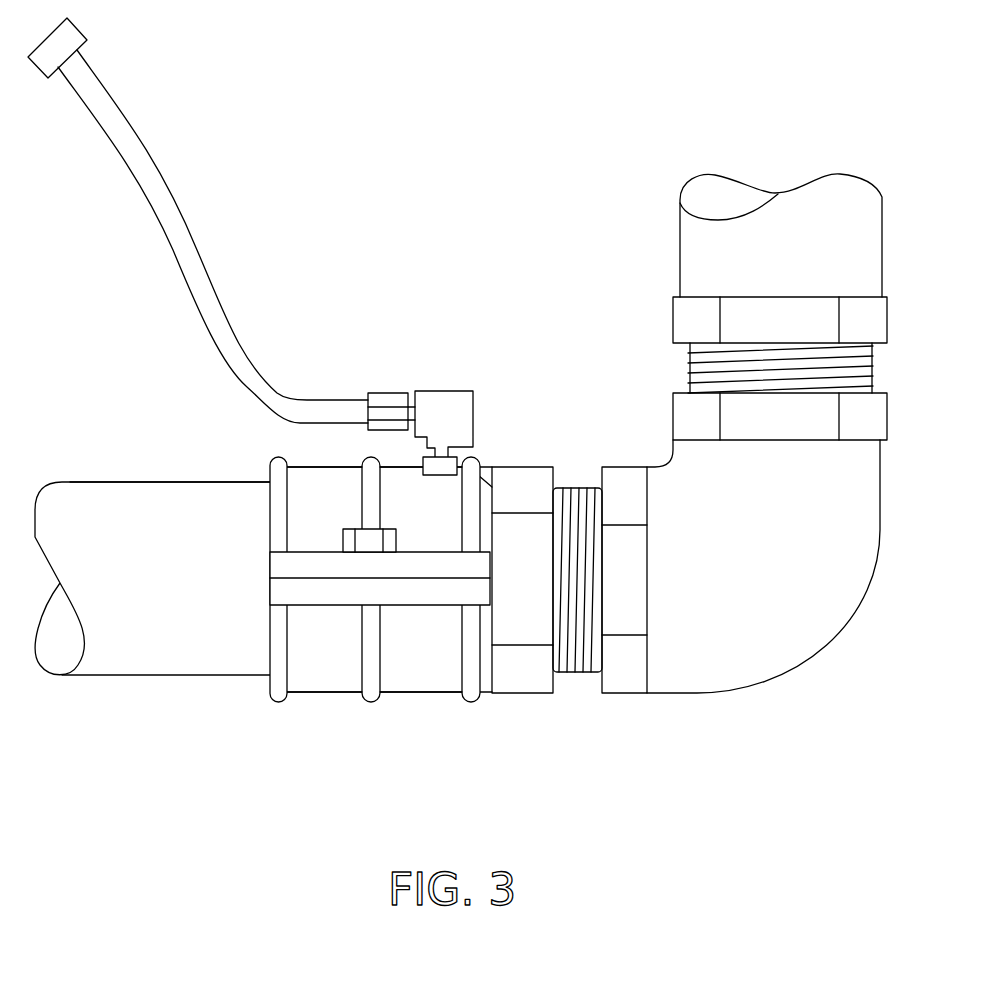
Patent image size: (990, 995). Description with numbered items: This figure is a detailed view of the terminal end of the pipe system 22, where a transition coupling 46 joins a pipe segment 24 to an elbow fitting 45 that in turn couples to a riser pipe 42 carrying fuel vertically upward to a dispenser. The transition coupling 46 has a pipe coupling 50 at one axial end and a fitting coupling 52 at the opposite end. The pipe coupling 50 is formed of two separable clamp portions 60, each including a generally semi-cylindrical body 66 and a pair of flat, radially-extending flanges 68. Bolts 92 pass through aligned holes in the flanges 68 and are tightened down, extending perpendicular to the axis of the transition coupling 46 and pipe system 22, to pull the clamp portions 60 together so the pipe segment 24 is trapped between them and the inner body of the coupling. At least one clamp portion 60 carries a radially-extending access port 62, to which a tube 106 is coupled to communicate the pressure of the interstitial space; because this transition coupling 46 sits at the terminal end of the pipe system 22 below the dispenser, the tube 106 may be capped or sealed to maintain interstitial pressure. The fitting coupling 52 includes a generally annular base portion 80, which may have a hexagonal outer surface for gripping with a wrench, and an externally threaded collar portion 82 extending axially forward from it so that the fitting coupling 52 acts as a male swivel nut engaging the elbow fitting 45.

The pipe system 22 is at (105, 675).
The pipe segment 24 is at (128, 494).
The riser pipe 42 is at (882, 237).
The elbow fitting 45 is at (826, 615).
The transition coupling 46 is at (291, 695).
The pipe coupling 50 is at (296, 432).
The fitting coupling 52 is at (491, 773).
The clamp portion 60 is at (322, 468).
The access port 62 is at (455, 463).
The semi-cylindrical body 66 is at (398, 470).
The flange 68 is at (275, 563).
The base portion 80 is at (540, 695).
The collar portion 82 is at (595, 640).
The bolt 92 is at (343, 540).
The tube 106 is at (192, 244).